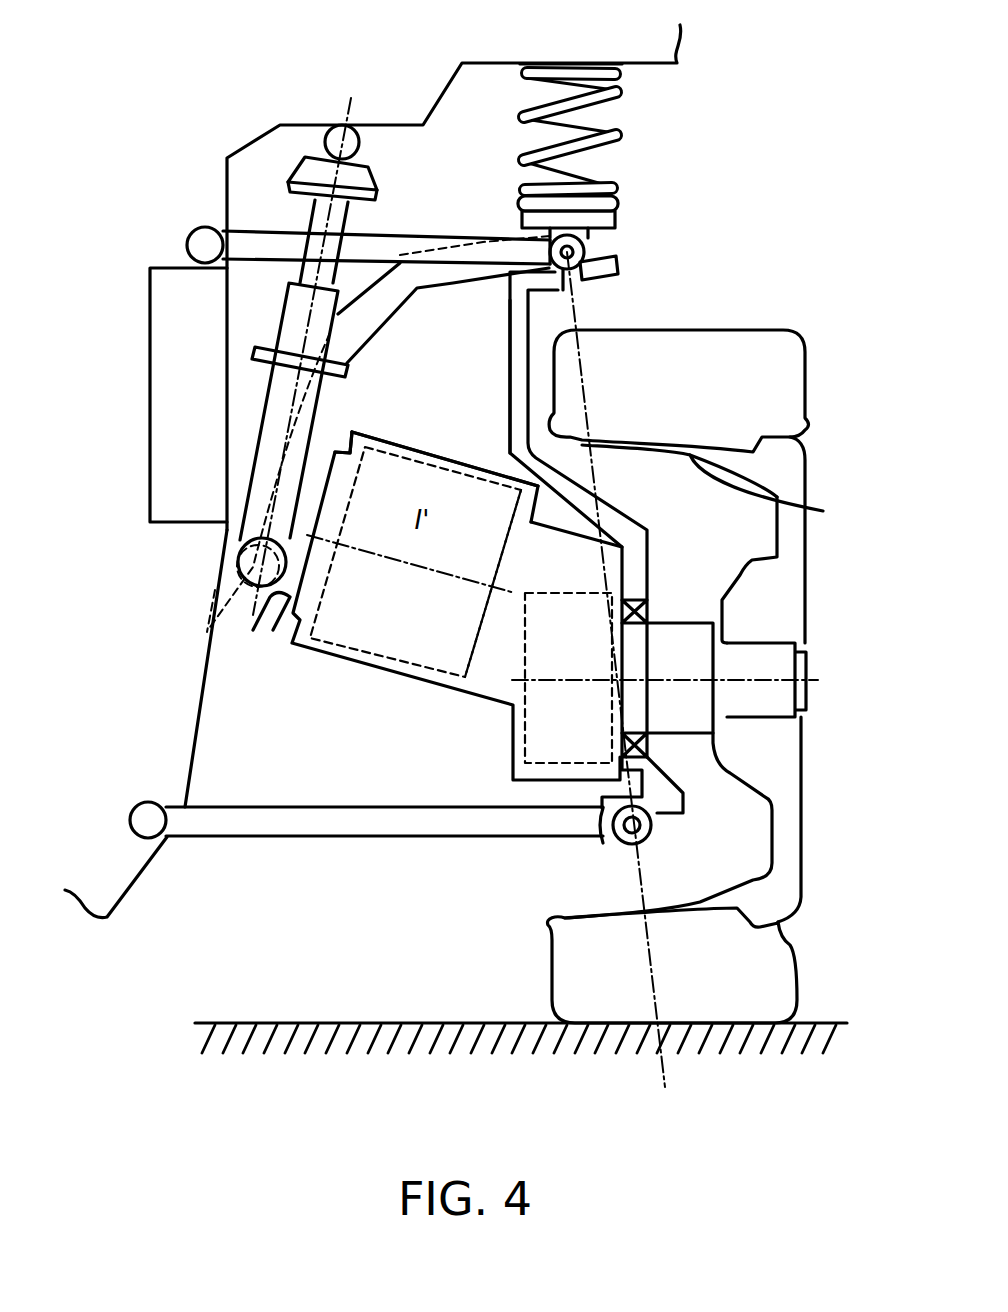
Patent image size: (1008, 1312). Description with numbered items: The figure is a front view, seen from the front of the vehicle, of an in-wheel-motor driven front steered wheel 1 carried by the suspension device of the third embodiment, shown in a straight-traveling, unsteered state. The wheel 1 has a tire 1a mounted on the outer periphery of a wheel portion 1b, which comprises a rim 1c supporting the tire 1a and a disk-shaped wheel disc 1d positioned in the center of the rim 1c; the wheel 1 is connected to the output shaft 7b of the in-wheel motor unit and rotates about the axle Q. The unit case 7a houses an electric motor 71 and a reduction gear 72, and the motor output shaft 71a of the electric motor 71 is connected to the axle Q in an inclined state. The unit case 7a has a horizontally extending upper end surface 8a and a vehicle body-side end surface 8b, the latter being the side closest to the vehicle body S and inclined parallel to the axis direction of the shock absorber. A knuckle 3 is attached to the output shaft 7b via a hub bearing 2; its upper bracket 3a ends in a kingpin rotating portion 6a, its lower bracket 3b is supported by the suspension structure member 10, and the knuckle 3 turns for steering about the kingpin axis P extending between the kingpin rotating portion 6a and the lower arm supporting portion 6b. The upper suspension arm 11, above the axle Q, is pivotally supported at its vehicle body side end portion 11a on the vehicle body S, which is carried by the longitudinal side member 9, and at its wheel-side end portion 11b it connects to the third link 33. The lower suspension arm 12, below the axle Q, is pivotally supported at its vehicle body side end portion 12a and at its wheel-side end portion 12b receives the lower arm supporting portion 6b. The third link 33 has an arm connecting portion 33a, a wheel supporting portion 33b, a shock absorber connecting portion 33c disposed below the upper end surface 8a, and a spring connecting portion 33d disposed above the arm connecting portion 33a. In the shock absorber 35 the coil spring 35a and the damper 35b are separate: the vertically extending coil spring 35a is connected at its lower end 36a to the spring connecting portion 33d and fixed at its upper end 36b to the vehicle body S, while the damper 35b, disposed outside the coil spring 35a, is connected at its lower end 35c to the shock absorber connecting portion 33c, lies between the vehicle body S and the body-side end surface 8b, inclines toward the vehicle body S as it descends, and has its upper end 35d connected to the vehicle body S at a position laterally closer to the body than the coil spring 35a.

The wheel 1 is at (720, 648).
The tire 1a is at (748, 347).
The wheel portion 1b is at (729, 679).
The rim 1c is at (718, 486).
The wheel disc 1d is at (848, 505).
The hub bearing 2 is at (806, 633).
The knuckle 3 is at (581, 555).
The upper bracket 3a is at (508, 392).
The lower bracket 3b is at (663, 803).
The kingpin rotating portion 6a is at (565, 282).
The lower arm supporting portion 6b is at (612, 805).
The unit case 7a is at (435, 653).
The output shaft 7b is at (683, 732).
The upper end surface 8a is at (407, 447).
The vehicle body-side end surface 8b is at (258, 605).
The side member 9 is at (163, 411).
The suspension structure member 10 is at (625, 163).
The upper suspension arm 11 is at (323, 249).
The vehicle body side end portion 11a is at (200, 245).
The wheel-side end portion 11b is at (513, 250).
The lower suspension arm 12 is at (377, 860).
The vehicle body side end portion 12a is at (143, 824).
The wheel-side end portion 12b is at (645, 843).
The third link 33 is at (427, 448).
The arm connecting portion 33a is at (590, 272).
The wheel supporting portion 33b is at (600, 282).
The shock absorber connecting portion 33c is at (212, 641).
The spring connecting portion 33d is at (585, 242).
The shock absorber 35 is at (341, 340).
The coil spring 35a is at (540, 193).
The damper 35b is at (350, 220).
The lower end 35c is at (240, 566).
The shock absorber upper ball mount 35d is at (330, 138).
The lower end 36a is at (603, 235).
The upper end 36b is at (582, 68).
The electric motor 71 is at (380, 658).
The motor output shaft 71a is at (507, 593).
The speed reduction gear unit 72 is at (510, 742).
The vehicle body S is at (176, 134).
The kingpin axis P is at (619, 682).
The axle Q is at (675, 679).